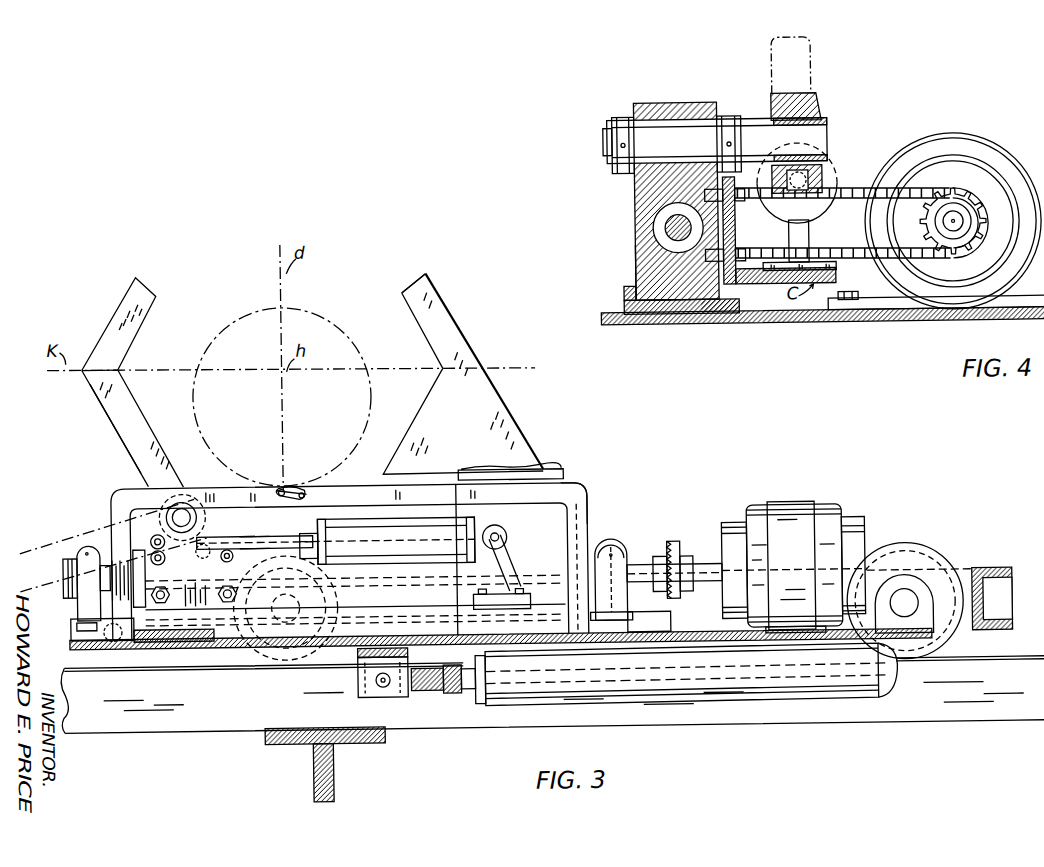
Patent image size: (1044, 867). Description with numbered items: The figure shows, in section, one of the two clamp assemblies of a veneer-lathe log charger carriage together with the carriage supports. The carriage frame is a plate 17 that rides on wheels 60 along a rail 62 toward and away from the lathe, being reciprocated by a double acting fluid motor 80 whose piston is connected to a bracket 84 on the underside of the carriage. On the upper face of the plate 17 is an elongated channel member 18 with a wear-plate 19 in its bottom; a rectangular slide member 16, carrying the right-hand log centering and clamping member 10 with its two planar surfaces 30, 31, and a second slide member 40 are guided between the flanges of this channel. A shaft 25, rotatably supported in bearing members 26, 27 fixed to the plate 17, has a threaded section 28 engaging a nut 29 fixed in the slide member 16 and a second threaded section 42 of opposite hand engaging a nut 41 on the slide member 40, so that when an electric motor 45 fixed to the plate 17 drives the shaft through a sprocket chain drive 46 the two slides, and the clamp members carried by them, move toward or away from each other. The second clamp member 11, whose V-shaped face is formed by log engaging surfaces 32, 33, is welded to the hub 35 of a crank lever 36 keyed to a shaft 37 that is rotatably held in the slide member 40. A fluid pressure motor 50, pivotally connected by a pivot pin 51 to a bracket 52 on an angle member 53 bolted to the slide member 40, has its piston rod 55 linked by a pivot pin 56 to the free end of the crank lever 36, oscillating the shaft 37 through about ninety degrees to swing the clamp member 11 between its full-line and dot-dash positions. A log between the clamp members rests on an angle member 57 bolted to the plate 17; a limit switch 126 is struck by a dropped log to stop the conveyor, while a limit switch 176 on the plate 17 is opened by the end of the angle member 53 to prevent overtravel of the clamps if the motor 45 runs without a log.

In FIG. 3, the log centering and clamping member 10 is at (497, 407).
In FIG. 3, the clamp member 11 is at (113, 412).
In FIG. 4, the clamp member 11 is at (810, 57).
In FIG. 3, the slide member 16 is at (563, 470).
In FIG. 3, the plate 17 is at (718, 634).
In FIG. 4, the plate 17 is at (760, 327).
In FIG. 3, the channel-like member 18 is at (142, 650).
In FIG. 4, the channel-like member 18 is at (632, 318).
In FIG. 3, the wear-plate 19 is at (187, 650).
In FIG. 4, the wear-plate 19 is at (690, 318).
In FIG. 3, the shaft 25 is at (640, 562).
In FIG. 3, the bearing member 26 is at (612, 537).
In FIG. 3, the bearing member 27 is at (70, 550).
In FIG. 3, the threaded section 28 is at (602, 538).
In FIG. 3, the nut 29 is at (586, 517).
In FIG. 3, the planar surface 30 is at (413, 323).
In FIG. 3, the planar surface 31 is at (418, 421).
In FIG. 3, the log engaging surface 32 is at (140, 331).
In FIG. 3, the log engaging surface 33 is at (157, 443).
In FIG. 3, the hub 35 is at (198, 522).
In FIG. 4, the hub 35 is at (820, 107).
In FIG. 3, the crank lever 36 is at (131, 518).
In FIG. 3, the shaft 37 is at (188, 500).
In FIG. 4, the shaft 37 is at (823, 133).
In FIG. 3, the second slide member 40 is at (248, 538).
In FIG. 4, the second slide member 40 is at (640, 193).
In FIG. 4, the nut 41 is at (640, 252).
In FIG. 3, the second threaded section 42 is at (88, 548).
In FIG. 4, the second threaded section 42 is at (654, 228).
In FIG. 3, the electric motor 45 is at (803, 505).
In FIG. 4, the electric motor 45 is at (997, 152).
In FIG. 3, the sprocket chain drive 46 is at (681, 556).
In FIG. 4, the sprocket chain drive 46 is at (902, 242).
In FIG. 3, the fluid pressure actuated motor 50 is at (414, 514).
In FIG. 4, the fluid pressure actuated motor 50 is at (835, 178).
In FIG. 3, the pivot pin 51 is at (494, 527).
In FIG. 3, the bracket 52 is at (518, 562).
In FIG. 4, the bracket 52 is at (808, 238).
In FIG. 3, the angle member 53 is at (506, 530).
In FIG. 4, the angle member 53 is at (737, 240).
In FIG. 3, the piston rod 55 is at (277, 543).
In FIG. 4, the piston rod 55 is at (830, 163).
In FIG. 3, the pivot pin 56 is at (165, 587).
In FIG. 3, the angle member 57 is at (586, 493).
In FIG. 3, the wheel 60 is at (283, 663).
In FIG. 3, the rail 62 is at (218, 718).
In FIG. 3, the fluid actuated motor 80 is at (816, 707).
In FIG. 3, the bracket 84 is at (376, 681).
In FIG. 3, the limit switch 126 is at (327, 481).
In FIG. 3, the limit switch 176 is at (673, 615).